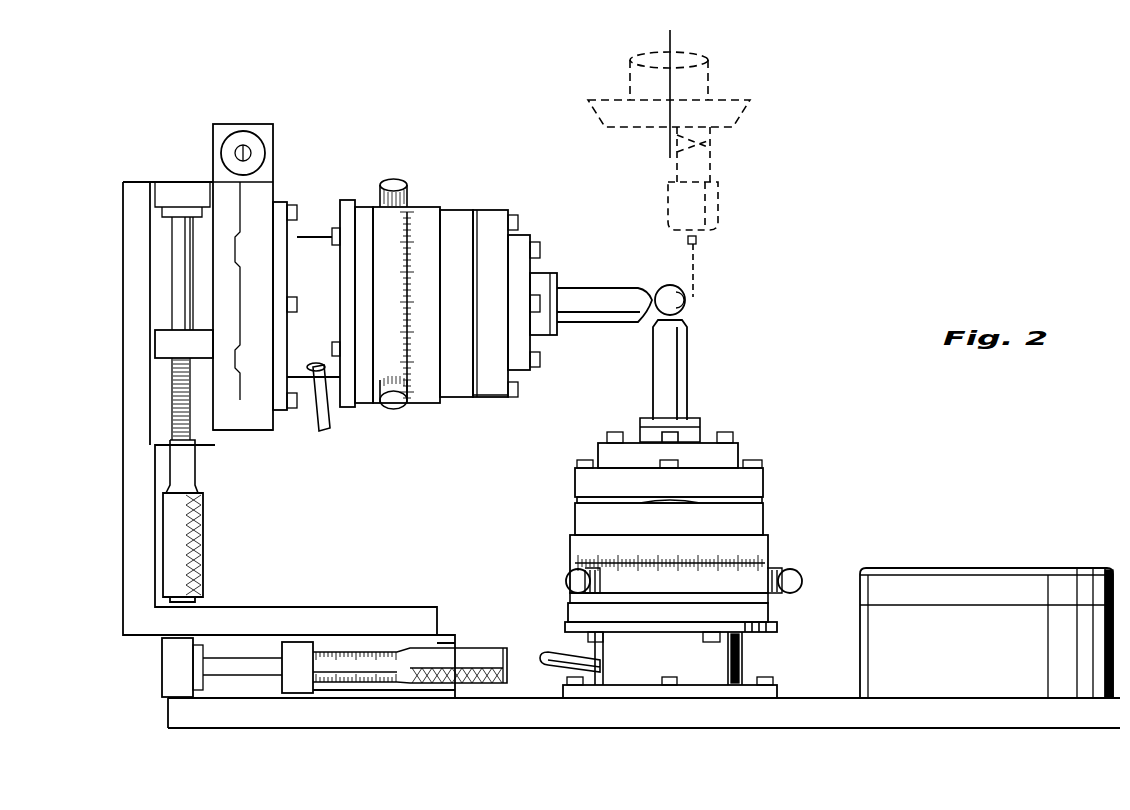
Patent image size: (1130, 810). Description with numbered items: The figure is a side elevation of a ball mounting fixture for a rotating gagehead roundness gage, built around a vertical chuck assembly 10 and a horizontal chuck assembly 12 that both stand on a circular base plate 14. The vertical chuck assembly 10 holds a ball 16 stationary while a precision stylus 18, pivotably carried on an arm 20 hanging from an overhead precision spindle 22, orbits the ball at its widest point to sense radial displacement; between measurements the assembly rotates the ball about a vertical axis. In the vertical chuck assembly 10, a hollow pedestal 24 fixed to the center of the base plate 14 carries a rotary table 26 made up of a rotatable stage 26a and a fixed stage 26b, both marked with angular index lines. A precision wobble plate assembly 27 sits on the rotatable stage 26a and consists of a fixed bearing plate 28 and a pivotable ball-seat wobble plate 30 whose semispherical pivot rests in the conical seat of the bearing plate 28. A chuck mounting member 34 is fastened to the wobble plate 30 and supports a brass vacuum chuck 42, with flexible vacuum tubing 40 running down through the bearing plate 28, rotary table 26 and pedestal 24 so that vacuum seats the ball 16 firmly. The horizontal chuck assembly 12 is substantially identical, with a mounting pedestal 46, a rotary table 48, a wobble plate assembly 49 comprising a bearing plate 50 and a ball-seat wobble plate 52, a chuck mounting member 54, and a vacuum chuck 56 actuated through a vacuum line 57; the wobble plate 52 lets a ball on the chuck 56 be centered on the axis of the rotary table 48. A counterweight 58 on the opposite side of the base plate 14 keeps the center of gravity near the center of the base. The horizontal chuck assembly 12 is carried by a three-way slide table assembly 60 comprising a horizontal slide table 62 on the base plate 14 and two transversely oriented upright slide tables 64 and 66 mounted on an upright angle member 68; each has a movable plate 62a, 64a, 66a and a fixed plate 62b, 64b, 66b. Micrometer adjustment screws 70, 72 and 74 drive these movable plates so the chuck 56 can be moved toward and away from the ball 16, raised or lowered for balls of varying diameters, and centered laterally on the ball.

The vertical chuck assembly 10 is at (674, 559).
The horizontal chuck assembly 12 is at (463, 299).
The circular base plate 14 is at (760, 705).
The ball 16 is at (665, 285).
The precision stylus 18 is at (697, 268).
The arm 20 is at (704, 168).
The precision spindle 22 is at (690, 72).
The hollow pedestal 24 is at (727, 660).
The rotary table 26 is at (666, 561).
The rotatable stage 26a is at (578, 550).
The fixed stage 26b is at (733, 588).
The precision wobble plate assembly 27 is at (572, 501).
The fixed bearing plate 28 is at (750, 517).
The ball-seat wobble plate 30 is at (748, 483).
The chuck mounting member 34 is at (722, 455).
The flexible vacuum tubing 40 is at (560, 655).
The brass vacuum chuck 42 is at (674, 358).
The mounting pedestal 46 is at (309, 247).
The rotary table 48 is at (424, 205).
The wobble plate assembly 49 is at (475, 402).
The bearing plate 50 is at (453, 220).
The ball-seat wobble plate 52 is at (488, 218).
The chuck mounting member 54 is at (520, 246).
The vacuum chuck 56 is at (582, 298).
The vacuum line 57 is at (326, 415).
The counterweight 58 is at (980, 615).
The three-way slide table assembly 60 is at (110, 635).
The horizontal slide table 62 is at (334, 703).
The movable plate 62a is at (218, 650).
The fixed plate 62b is at (243, 690).
The upright slide table 64 is at (138, 270).
The movable plate 64a is at (200, 238).
The fixed plate 64b is at (160, 300).
The upright slide table 66 is at (265, 280).
The movable plate 66a is at (263, 412).
The fixed plate 66b is at (227, 422).
The upright angle member 68 is at (133, 480).
The micrometer adjustment screw 70 is at (360, 692).
The micrometer adjustment screw 72 is at (170, 467).
The micrometer adjustment screw 74 is at (245, 128).